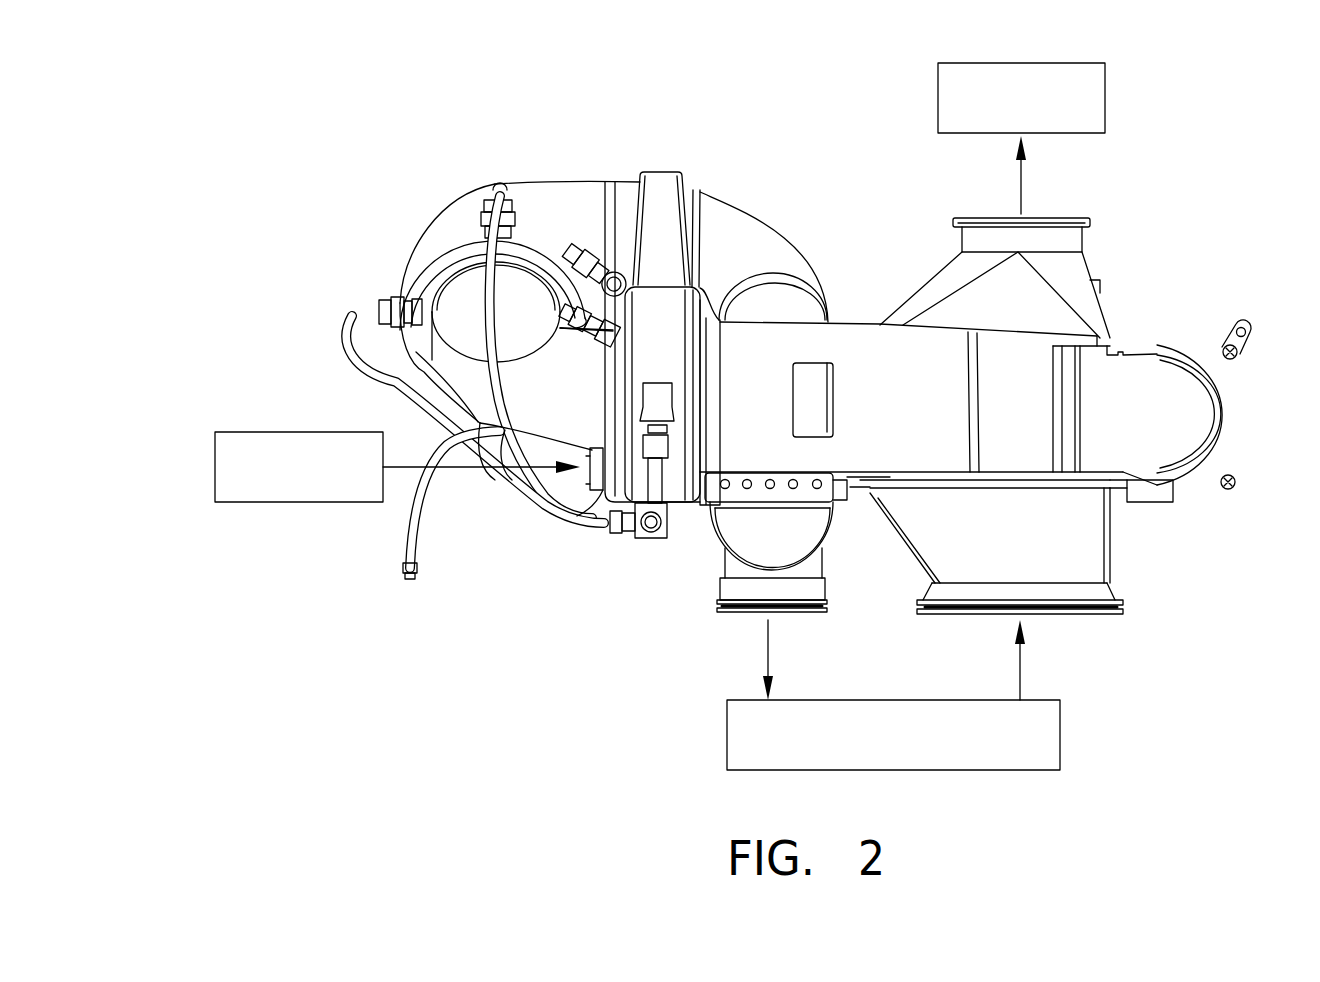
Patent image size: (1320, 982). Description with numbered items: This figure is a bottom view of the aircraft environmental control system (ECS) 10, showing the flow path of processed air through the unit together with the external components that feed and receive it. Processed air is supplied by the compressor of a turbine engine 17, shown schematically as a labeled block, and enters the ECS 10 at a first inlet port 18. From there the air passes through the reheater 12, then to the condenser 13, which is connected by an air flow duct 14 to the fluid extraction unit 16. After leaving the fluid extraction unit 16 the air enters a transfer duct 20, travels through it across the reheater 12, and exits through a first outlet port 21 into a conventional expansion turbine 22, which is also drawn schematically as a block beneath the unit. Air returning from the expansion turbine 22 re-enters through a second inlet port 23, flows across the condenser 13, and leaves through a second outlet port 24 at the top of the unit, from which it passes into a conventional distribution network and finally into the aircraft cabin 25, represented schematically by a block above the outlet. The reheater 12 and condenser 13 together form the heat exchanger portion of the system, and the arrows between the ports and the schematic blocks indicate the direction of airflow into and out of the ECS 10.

The aircraft environmental control system (ECS) 10 is at (388, 92).
The reheater 12 is at (736, 500).
The condenser 13 is at (1099, 346).
The air flow duct 14 is at (1228, 412).
The fluid extraction unit 16 is at (943, 473).
The compressor of a turbine engine 17 is at (299, 432).
The first inlet port 18 is at (606, 478).
The transfer duct 20 is at (557, 179).
The first outlet port 21 is at (740, 615).
The expansion turbine 22 is at (727, 735).
The second inlet port 23 is at (1078, 618).
The second outlet port 24 is at (1062, 217).
The aircraft cabin 25 is at (938, 93).